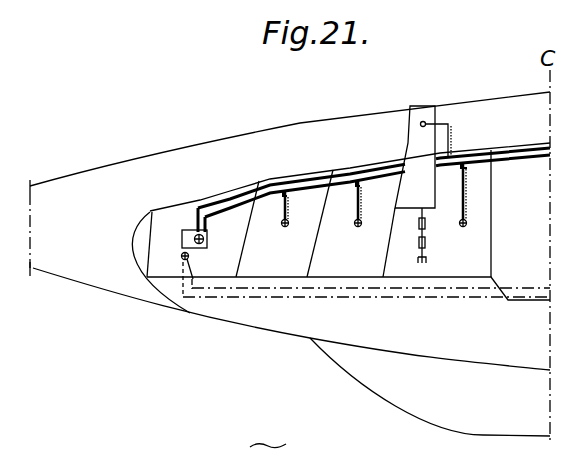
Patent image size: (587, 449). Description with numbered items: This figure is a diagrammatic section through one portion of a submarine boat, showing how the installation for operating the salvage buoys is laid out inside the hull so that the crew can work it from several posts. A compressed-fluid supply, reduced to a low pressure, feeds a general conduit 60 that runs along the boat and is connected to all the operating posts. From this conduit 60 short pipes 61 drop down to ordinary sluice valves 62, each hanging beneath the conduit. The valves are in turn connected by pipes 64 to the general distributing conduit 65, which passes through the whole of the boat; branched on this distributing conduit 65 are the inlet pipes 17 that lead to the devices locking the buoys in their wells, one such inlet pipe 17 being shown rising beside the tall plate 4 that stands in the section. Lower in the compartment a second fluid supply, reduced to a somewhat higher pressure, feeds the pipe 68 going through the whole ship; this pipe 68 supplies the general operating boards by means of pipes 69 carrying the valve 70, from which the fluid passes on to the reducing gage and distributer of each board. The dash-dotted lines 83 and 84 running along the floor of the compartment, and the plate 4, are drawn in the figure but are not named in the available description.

The hull plate 4 is at (401, 112).
The inlet pipe 17 is at (452, 138).
The general conduit 60 is at (271, 185).
The pipe 61 is at (197, 217).
The ordinary sluice valve 62 is at (369, 238).
The pipe 64 is at (360, 202).
The general distributing conduit 65 is at (208, 238).
The pipe 68 is at (481, 300).
The pipe 69 is at (181, 258).
The valve 70 is at (201, 266).
The connecting pipe 83 is at (196, 286).
The return conduit 84 is at (512, 293).